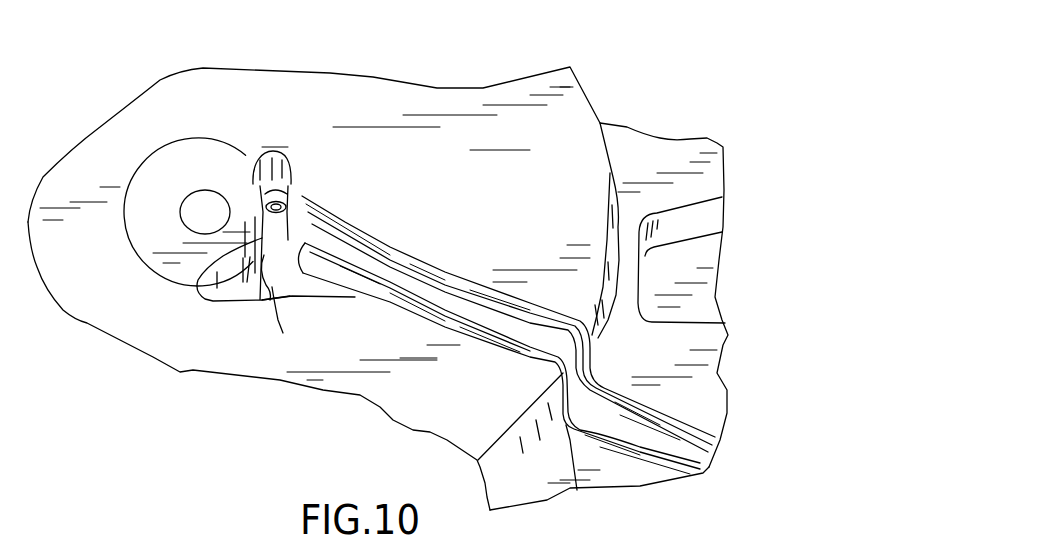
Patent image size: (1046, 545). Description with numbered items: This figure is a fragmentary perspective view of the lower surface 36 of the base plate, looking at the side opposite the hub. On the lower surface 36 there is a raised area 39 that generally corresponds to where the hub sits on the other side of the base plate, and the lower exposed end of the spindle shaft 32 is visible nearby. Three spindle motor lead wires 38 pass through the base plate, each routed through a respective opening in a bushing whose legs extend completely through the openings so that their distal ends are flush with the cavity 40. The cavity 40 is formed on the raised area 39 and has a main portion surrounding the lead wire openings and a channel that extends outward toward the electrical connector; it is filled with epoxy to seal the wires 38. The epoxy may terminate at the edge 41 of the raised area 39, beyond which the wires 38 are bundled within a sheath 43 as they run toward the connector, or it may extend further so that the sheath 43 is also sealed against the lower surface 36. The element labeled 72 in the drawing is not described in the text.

The disk with central hole 32 is at (205, 197).
The bracket body 36 is at (654, 166).
The pivot pin 38 is at (290, 213).
The housing body 39 is at (477, 181).
The upper guide rail 40 is at (380, 260).
The end face 41 is at (503, 467).
The lower guide channel 43 is at (467, 310).
The latch member 72 is at (280, 202).